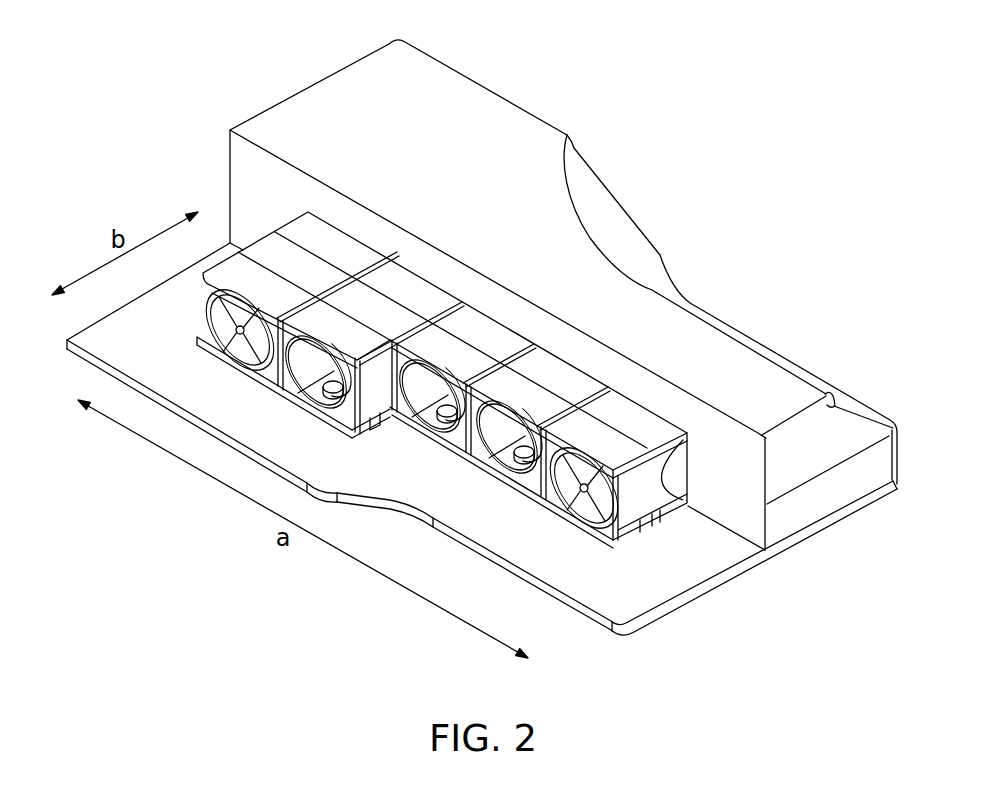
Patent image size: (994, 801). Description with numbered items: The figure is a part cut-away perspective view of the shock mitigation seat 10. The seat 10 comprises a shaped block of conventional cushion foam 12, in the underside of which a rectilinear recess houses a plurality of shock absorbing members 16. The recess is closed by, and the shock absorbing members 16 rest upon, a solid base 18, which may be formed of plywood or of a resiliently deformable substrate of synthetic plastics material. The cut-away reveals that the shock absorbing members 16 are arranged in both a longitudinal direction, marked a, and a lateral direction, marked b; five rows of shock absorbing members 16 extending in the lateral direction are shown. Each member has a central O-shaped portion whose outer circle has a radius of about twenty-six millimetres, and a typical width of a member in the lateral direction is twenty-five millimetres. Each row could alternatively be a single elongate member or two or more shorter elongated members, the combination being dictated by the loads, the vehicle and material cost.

The shock mitigation seat 10 is at (852, 261).
The cushion foam 12 is at (405, 171).
The shock absorbing members 16 is at (349, 315).
The solid base 18 is at (607, 594).